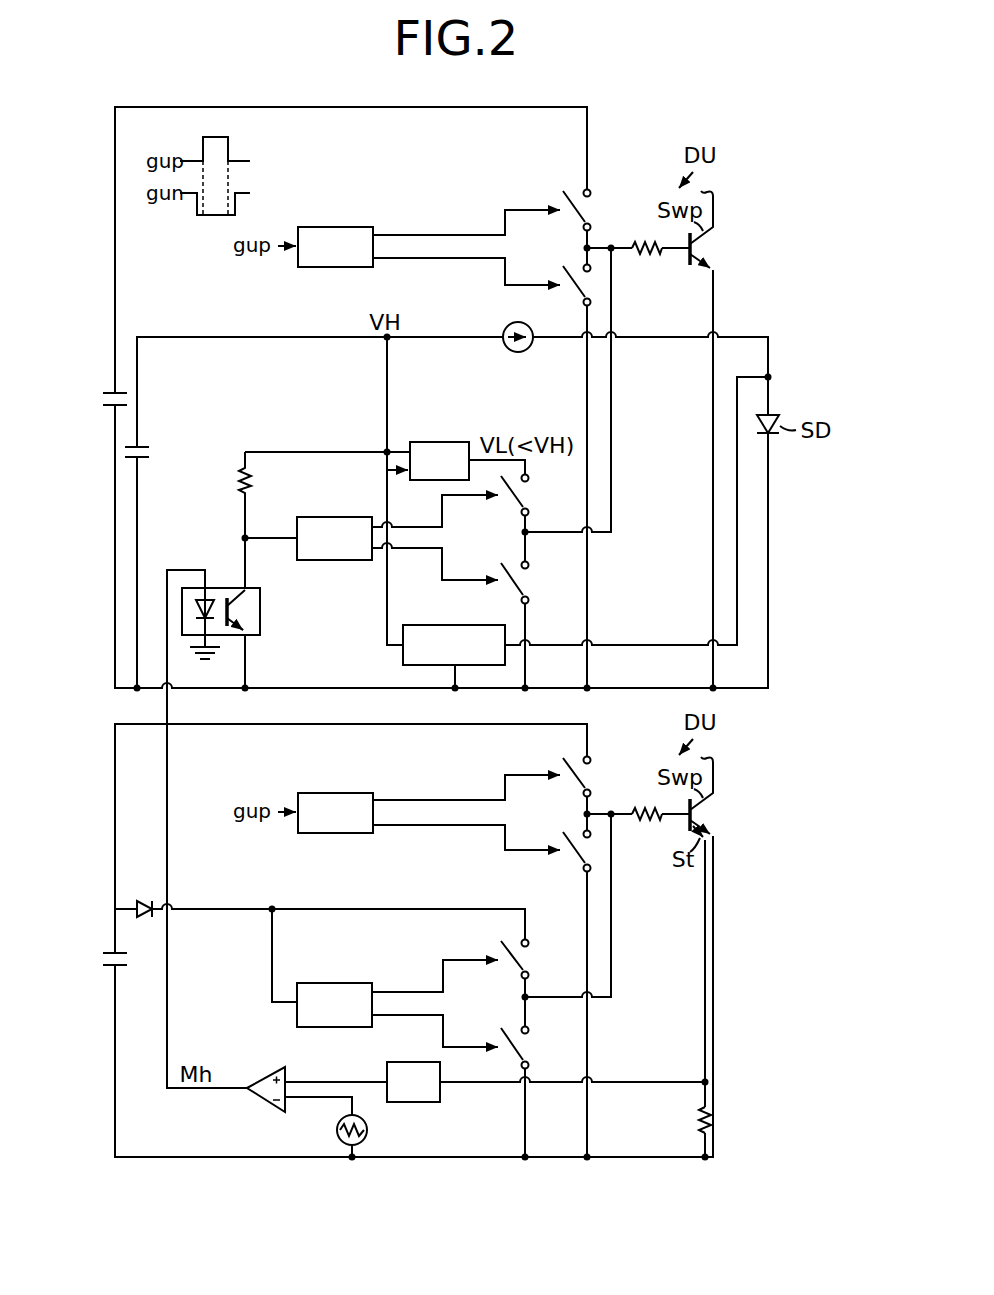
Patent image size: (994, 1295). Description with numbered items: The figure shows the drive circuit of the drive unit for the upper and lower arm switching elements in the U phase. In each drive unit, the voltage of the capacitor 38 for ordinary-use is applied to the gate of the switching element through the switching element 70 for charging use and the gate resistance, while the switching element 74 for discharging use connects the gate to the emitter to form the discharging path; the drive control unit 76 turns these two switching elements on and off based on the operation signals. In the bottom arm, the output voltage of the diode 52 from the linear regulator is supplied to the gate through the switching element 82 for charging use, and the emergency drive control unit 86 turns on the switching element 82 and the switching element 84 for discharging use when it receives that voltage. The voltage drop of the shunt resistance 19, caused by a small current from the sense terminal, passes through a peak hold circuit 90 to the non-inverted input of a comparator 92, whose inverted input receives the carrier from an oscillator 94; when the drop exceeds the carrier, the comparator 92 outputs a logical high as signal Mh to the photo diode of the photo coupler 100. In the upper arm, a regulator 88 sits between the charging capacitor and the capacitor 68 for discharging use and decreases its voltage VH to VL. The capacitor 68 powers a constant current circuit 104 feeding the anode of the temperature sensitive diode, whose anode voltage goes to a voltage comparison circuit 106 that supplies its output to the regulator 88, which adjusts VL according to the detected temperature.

The capacitor for ordinary-use 38 is at (105, 393).
The capacitor for discharging use 68 is at (145, 448).
The drive control unit 76 is at (350, 227).
The switching element for charging use 70 is at (593, 211).
The switching element for discharging use 74 is at (570, 291).
The constant current circuit 104 is at (528, 351).
The regulator 88 is at (450, 442).
The emergency drive control unit 86 is at (355, 517).
The switching element for charging use 82 is at (530, 497).
The switching element for discharging use 84 is at (530, 584).
The photo coupler 100 is at (262, 613).
The voltage comparison circuit 106 is at (468, 625).
The diode 52 is at (140, 900).
The comparator 92 is at (261, 1103).
The oscillator 94 is at (337, 1132).
The peak hold circuit 90 is at (422, 1102).
The shunt resistance 19 is at (700, 1122).